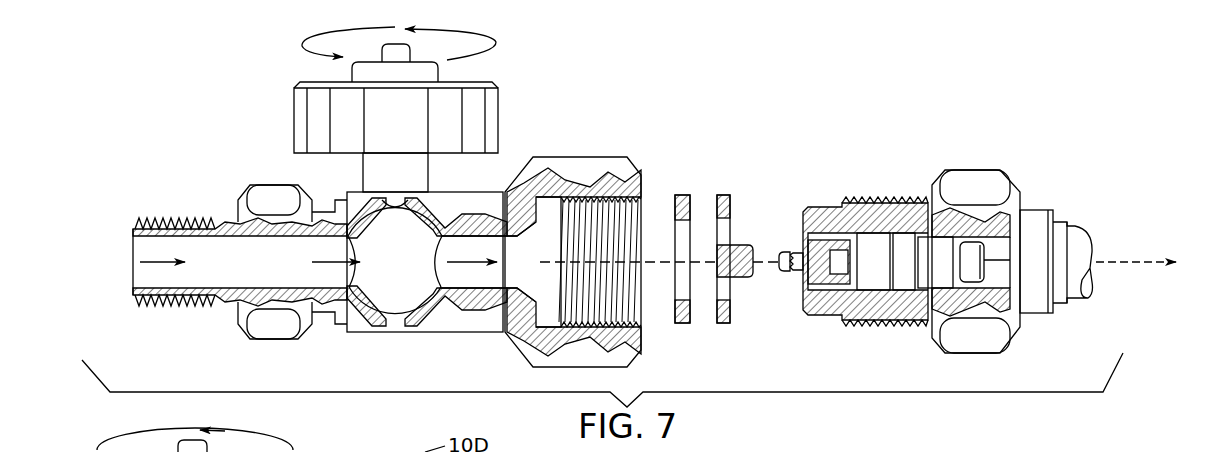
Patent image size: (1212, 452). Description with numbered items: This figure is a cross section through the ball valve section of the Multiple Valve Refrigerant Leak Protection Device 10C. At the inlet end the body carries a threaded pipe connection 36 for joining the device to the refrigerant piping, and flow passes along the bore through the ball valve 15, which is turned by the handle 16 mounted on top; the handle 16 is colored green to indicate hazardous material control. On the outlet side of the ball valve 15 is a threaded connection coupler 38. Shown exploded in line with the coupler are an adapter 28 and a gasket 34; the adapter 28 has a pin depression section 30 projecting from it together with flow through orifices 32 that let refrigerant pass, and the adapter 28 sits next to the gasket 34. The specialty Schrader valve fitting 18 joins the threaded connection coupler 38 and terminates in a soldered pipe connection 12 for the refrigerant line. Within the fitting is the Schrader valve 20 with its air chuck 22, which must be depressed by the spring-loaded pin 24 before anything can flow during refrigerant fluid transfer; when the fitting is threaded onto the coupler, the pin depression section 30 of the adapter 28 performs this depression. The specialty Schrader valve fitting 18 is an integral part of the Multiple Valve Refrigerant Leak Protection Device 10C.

The Multiple Valve Refrigerant Leak Protection Device 10C is at (239, 128).
The soldered pipe connection 12 is at (1070, 240).
The ball valve 15 is at (393, 296).
The handle 16 is at (502, 113).
The specialty Schrader valve fitting 18 is at (982, 185).
The Schrader valve 20 is at (946, 252).
The air chuck 22 is at (877, 252).
The spring-loaded pin 24 is at (786, 271).
The adapter 28 is at (680, 195).
The pin depression section 30 is at (754, 262).
The flow through orifices 32 is at (726, 232).
The gasket 34 is at (720, 195).
The threaded pipe connection 36 is at (162, 218).
The threaded connection coupler 38 is at (600, 157).